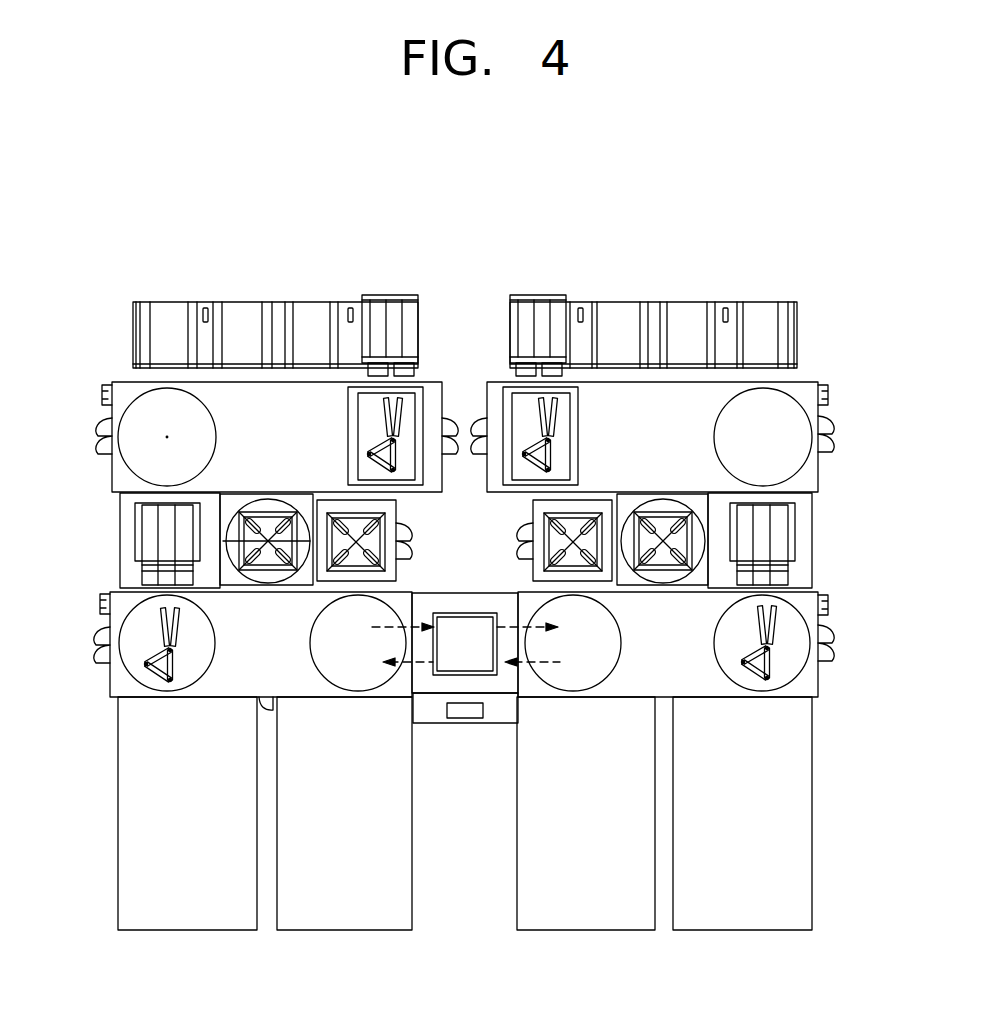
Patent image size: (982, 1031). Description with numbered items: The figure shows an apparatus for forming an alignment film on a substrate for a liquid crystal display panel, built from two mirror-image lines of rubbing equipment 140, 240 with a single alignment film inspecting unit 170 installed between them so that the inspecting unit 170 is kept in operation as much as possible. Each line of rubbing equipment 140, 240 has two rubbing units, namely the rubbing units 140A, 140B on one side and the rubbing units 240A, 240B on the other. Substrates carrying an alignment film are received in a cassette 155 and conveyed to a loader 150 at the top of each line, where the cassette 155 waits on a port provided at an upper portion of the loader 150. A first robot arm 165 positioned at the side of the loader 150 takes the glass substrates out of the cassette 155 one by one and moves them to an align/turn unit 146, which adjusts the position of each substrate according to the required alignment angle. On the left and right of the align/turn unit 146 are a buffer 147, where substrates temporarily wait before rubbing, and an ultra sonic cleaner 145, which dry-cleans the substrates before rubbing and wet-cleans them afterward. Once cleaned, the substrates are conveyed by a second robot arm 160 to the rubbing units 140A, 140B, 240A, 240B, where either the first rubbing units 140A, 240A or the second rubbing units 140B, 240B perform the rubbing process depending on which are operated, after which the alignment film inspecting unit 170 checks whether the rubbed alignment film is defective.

The loader 150 is at (167, 308).
The cassette 155 is at (390, 306).
The first robot arm 165 is at (398, 418).
The buffer 147 is at (133, 524).
The align/turn unit 146 is at (225, 555).
The ultra sonic cleaner (USC) 145 is at (413, 547).
The second robot arm 160 is at (163, 627).
The alignment film inspecting unit 170 is at (462, 723).
The rubbing equipment 140 is at (265, 858).
The first rubbing unit 140A is at (183, 930).
The second rubbing unit 140B is at (335, 838).
The rubbing equipment 240 is at (664, 858).
The first rubbing unit 240A is at (583, 930).
The second rubbing unit 240B is at (742, 838).